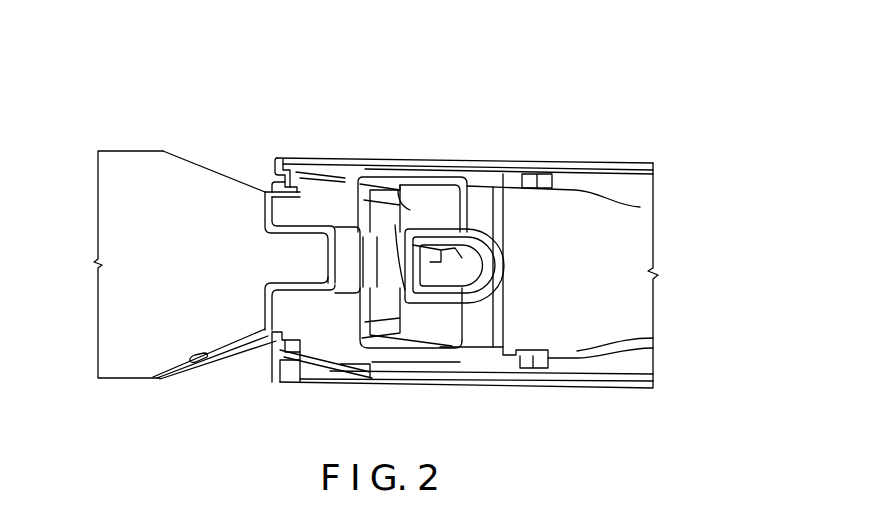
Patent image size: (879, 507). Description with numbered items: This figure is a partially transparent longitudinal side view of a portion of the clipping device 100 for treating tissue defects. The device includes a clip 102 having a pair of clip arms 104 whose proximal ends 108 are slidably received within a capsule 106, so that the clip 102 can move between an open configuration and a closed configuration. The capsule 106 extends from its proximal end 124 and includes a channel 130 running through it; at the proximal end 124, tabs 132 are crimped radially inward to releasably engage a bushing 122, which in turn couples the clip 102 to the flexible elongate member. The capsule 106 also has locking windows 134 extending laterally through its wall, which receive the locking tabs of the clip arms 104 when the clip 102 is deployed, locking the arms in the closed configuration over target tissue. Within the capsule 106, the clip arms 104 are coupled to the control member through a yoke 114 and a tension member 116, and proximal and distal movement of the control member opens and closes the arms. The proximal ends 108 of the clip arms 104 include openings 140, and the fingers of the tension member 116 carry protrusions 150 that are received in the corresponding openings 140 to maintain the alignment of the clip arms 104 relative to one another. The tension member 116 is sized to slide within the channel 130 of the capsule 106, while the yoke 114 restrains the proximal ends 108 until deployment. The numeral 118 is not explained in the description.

The clipping device 100 is at (261, 82).
The clip 102 is at (539, 127).
The clip arms 104 is at (635, 262).
The capsule 106 is at (580, 167).
The proximal ends 108 is at (518, 198).
The yoke 114 is at (437, 357).
The tension member 116 is at (535, 365).
The mating connector 118 is at (116, 122).
The bushing 122 is at (120, 343).
The proximal end 124 is at (318, 158).
The channel 130 is at (640, 195).
The tabs 132 is at (273, 373).
The locking windows 134 is at (350, 200).
The openings 140 is at (395, 225).
The protrusions 150 is at (445, 292).